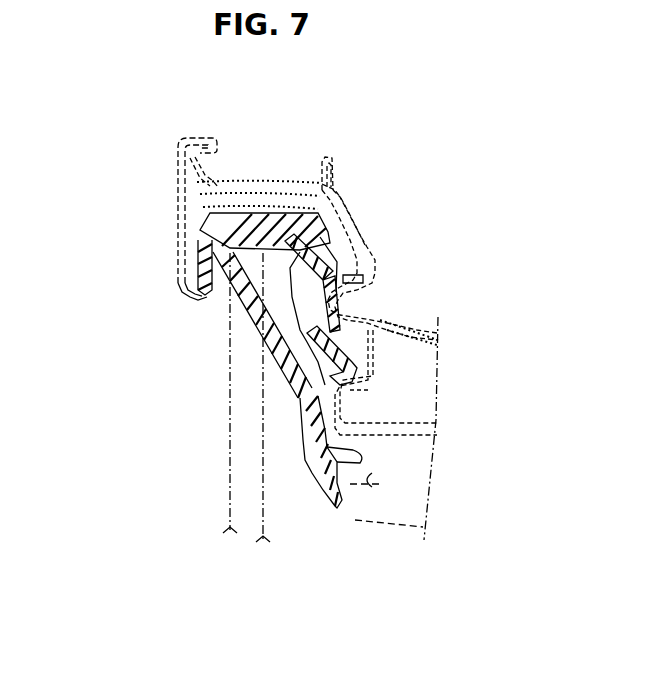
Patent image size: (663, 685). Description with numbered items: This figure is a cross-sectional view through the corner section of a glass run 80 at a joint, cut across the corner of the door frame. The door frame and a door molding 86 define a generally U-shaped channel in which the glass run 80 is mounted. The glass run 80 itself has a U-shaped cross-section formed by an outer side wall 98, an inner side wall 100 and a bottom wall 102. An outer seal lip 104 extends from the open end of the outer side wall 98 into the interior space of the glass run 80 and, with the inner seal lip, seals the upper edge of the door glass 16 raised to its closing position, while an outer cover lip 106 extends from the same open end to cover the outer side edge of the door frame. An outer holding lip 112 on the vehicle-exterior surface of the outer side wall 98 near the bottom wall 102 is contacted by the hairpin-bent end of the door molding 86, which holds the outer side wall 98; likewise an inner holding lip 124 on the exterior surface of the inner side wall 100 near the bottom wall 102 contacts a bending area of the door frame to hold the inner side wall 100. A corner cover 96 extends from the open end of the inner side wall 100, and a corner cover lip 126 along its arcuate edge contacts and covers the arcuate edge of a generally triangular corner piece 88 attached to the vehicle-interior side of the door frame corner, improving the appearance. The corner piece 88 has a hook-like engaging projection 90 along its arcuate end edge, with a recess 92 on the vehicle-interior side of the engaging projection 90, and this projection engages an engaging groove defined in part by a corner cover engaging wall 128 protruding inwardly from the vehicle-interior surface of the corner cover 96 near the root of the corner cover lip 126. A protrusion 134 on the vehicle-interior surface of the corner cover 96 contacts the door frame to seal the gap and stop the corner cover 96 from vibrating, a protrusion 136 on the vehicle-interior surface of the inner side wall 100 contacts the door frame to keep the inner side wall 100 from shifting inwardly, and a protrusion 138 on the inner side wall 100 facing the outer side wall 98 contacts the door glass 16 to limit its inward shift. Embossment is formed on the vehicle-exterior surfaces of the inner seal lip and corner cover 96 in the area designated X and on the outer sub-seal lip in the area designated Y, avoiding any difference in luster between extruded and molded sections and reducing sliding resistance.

The door glass 16 is at (230, 478).
The glass run 80 is at (182, 302).
The door molding 86 is at (178, 168).
The corner piece 88 is at (417, 507).
The engaging projection 90 is at (340, 470).
The recess 92 is at (380, 437).
The corner cover 96 is at (304, 478).
The outer side wall 98 is at (182, 278).
The inner side wall 100 is at (367, 325).
The bottom wall 102 is at (266, 213).
The outer seal lip 104 is at (216, 258).
The outer cover lip 106 is at (183, 296).
The outer holding lip 112 is at (198, 242).
The inner holding lip 124 is at (347, 242).
The corner cover lip 126 is at (342, 505).
The corner cover engaging wall 128 is at (362, 454).
The protrusion 134 is at (342, 404).
The protrusion 136 is at (337, 293).
The protrusion 138 is at (328, 242).
The area designated X is at (295, 391).
The area designated Y is at (197, 300).